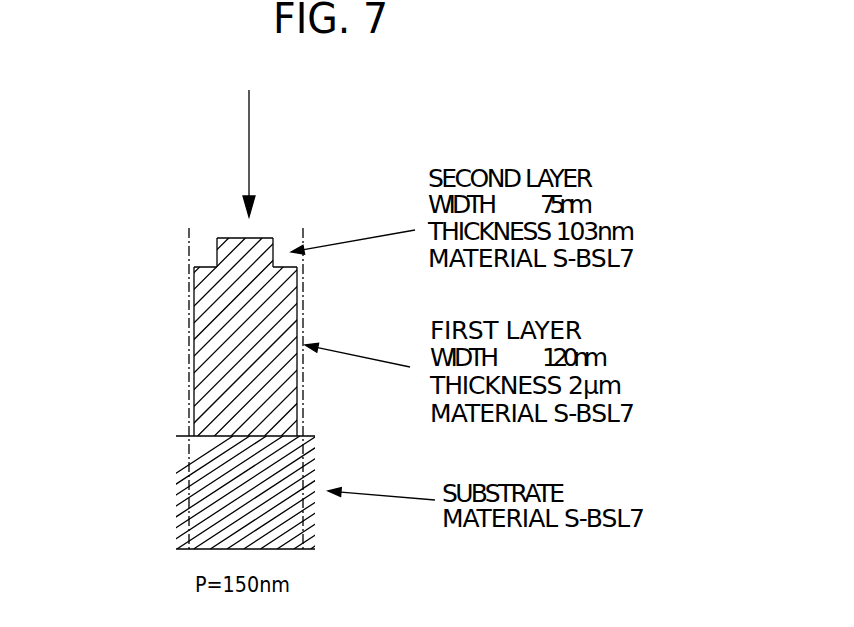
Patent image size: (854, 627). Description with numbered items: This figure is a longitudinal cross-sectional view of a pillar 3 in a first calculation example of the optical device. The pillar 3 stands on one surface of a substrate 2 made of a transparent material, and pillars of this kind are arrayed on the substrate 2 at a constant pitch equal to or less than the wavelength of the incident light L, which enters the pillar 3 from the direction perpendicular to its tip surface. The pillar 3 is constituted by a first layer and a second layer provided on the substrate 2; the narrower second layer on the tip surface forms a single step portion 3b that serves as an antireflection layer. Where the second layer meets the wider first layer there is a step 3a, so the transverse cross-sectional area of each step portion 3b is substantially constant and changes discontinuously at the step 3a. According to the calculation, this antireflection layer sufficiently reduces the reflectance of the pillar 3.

The substrate 2 is at (182, 498).
The pillar 3 is at (255, 333).
The step 3a is at (208, 263).
The step portion 3b is at (217, 248).
The incident light L is at (249, 120).